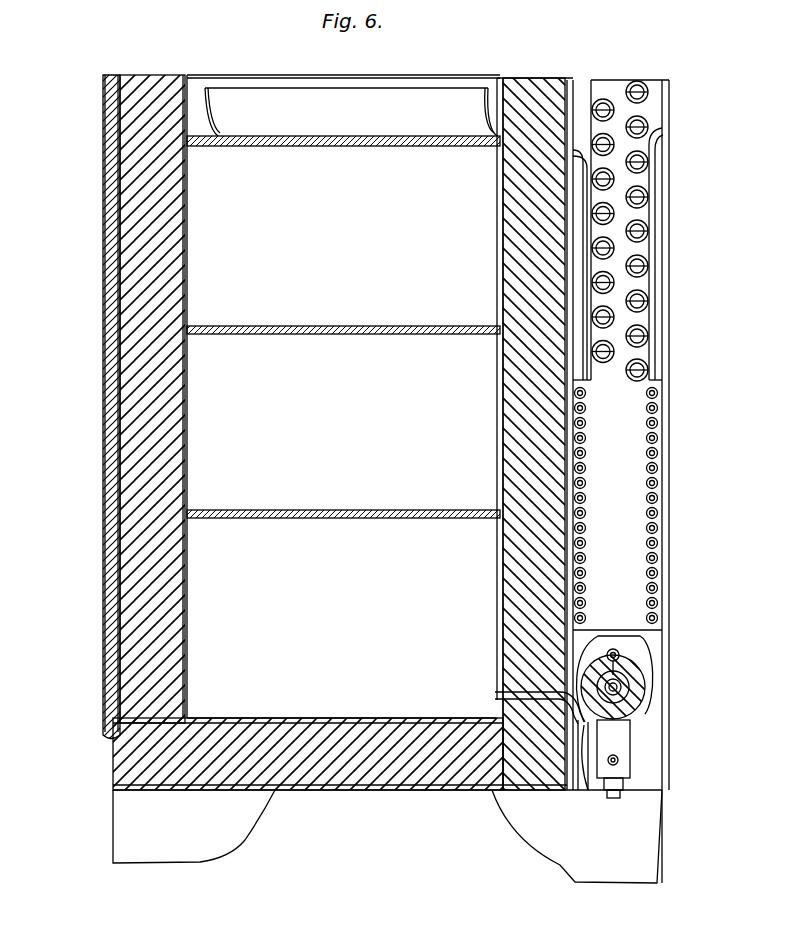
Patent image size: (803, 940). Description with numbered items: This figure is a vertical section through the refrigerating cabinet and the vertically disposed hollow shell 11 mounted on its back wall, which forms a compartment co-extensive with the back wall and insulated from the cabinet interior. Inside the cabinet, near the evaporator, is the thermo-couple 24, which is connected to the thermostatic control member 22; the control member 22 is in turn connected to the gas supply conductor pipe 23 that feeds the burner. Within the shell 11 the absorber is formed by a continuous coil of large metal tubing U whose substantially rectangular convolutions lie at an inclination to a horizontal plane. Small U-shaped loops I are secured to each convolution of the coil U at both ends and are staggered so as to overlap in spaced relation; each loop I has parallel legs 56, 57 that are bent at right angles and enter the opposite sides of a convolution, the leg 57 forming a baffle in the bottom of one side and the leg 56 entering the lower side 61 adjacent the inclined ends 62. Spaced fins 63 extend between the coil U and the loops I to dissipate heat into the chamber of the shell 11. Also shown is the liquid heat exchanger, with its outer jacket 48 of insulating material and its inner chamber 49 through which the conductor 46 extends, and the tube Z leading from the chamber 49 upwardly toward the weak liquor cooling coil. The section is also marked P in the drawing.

The tube Z is at (108, 112).
The thermo-couple 24 is at (495, 84).
The coil of large metal tubing U is at (641, 84).
The hollow shell 11 is at (670, 108).
The fins 63 is at (645, 135).
The loops I is at (656, 179).
The side of convolution 61 is at (649, 268).
The inclined ends 62 is at (606, 319).
The leg 56 is at (658, 436).
The leg 57 is at (584, 556).
The outer jacket 48 is at (644, 676).
The conductor 46 is at (630, 690).
The inner chamber 49 is at (645, 706).
The drain pipe P is at (630, 722).
The gas supply conductor pipe 23 is at (618, 762).
The thermostatic control member 22 is at (592, 792).